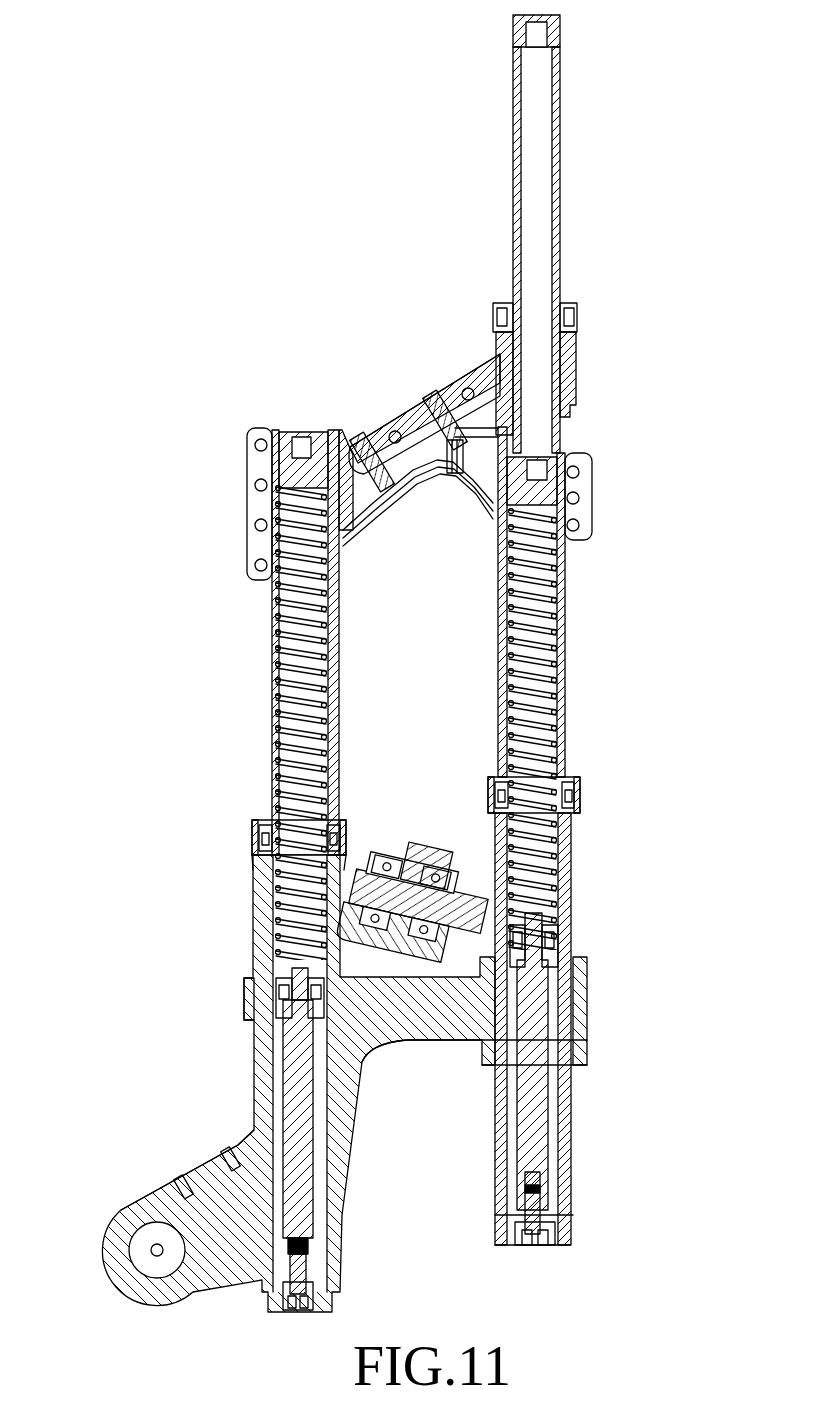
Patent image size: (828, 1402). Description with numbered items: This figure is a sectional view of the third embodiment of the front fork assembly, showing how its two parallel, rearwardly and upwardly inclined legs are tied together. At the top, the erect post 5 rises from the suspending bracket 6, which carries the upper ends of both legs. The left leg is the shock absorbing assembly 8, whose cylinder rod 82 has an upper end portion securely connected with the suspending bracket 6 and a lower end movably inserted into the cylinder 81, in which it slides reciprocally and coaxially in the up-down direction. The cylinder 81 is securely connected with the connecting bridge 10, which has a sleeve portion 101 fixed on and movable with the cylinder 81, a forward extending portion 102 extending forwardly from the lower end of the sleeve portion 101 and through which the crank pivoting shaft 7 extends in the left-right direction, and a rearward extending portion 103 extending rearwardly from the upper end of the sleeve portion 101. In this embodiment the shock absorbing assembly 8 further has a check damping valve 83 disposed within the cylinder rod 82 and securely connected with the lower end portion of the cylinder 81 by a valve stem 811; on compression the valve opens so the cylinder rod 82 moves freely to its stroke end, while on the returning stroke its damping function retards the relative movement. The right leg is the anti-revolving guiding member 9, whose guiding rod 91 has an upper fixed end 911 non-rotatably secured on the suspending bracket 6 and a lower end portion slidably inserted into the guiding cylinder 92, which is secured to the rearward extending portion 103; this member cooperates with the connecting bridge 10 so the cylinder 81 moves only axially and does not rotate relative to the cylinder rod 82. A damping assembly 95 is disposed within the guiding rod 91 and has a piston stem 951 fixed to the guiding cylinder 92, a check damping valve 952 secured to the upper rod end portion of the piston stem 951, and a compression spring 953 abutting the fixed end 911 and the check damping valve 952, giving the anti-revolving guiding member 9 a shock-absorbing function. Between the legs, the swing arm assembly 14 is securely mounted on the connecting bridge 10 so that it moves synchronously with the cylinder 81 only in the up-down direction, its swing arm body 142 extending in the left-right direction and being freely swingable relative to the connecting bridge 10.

The erect post 5 is at (513, 175).
The suspending bracket 6 is at (407, 412).
The crank pivoting shaft 7 is at (148, 1228).
The shock absorbing assembly 8 is at (314, 869).
The anti-revolving guiding member 9 is at (573, 836).
The connecting bridge 10 is at (373, 1083).
The swing arm assembly 14 is at (414, 847).
The cylinder 81 is at (257, 852).
The cylinder rod 82 is at (272, 700).
The check damping valve 83 is at (277, 1022).
The guiding rod 91 is at (565, 578).
The guiding cylinder 92 is at (581, 830).
The damping assembly 95 is at (552, 1088).
The sleeve portion 101 is at (246, 998).
The forward extending portion 102 is at (216, 1178).
The rearward extending portion 103 is at (430, 1015).
The swing arm body 142 is at (428, 852).
The valve stem 811 is at (303, 1142).
The upper fixed end 911 is at (584, 476).
The piston stem 951 is at (541, 1130).
The check damping valve 952 is at (555, 940).
The compression spring 953 is at (540, 708).